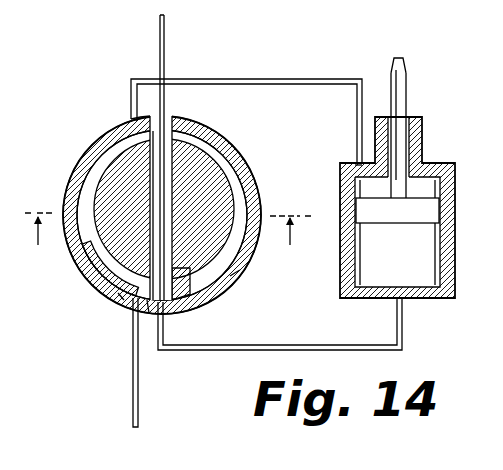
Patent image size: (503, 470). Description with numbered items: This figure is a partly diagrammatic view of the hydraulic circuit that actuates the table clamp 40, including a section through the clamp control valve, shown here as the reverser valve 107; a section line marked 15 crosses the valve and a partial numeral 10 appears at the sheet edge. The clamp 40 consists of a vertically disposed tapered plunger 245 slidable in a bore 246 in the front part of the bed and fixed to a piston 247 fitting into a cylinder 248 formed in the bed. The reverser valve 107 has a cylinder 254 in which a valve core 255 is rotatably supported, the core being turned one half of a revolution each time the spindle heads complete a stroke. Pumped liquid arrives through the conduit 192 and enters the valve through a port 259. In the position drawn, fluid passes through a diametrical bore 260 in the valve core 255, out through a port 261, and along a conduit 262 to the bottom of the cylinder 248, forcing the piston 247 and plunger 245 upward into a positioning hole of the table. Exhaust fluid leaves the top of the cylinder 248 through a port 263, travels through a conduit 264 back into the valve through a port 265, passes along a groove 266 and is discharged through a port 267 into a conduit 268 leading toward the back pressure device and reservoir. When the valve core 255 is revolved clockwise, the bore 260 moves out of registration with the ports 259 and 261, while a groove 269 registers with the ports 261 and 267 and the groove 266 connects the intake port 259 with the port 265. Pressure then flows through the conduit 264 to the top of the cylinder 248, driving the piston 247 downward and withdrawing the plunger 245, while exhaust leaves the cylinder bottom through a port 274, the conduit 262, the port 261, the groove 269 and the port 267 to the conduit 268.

The apparatus 10 is at (496, 376).
The section line for FIG. 15 is at (167, 244).
The clamp 40 is at (420, 196).
The reverser valve 107 is at (243, 138).
The conduit 192 is at (165, 42).
The plunger 245 is at (400, 96).
The bore 246 is at (418, 141).
The piston 247 is at (395, 210).
The cylinder 248 is at (453, 270).
The cylinder 254 is at (236, 280).
The valve core 255 is at (190, 306).
The port 259 is at (170, 131).
The diametrical bore 260 is at (118, 293).
The port 261 is at (149, 316).
The conduit 262 is at (284, 350).
The port 263 is at (352, 165).
The conduit 264 is at (262, 80).
The port 265 is at (130, 128).
The groove 266 is at (82, 183).
The port 267 is at (131, 316).
The conduit 268 is at (132, 410).
The groove 269 is at (232, 182).
The port 274 is at (411, 298).